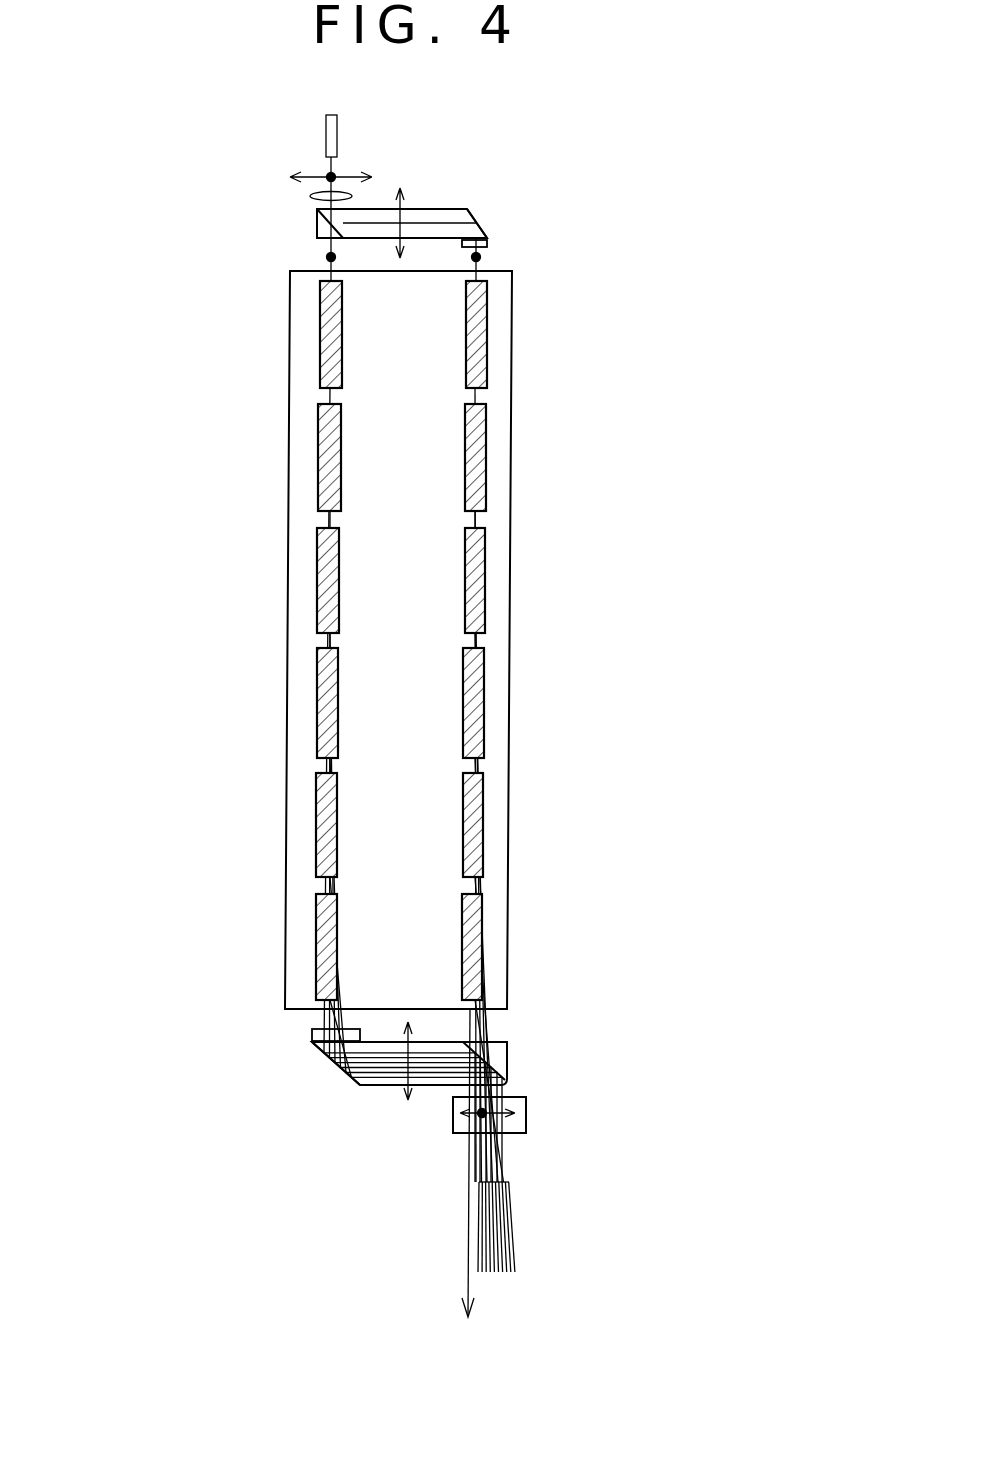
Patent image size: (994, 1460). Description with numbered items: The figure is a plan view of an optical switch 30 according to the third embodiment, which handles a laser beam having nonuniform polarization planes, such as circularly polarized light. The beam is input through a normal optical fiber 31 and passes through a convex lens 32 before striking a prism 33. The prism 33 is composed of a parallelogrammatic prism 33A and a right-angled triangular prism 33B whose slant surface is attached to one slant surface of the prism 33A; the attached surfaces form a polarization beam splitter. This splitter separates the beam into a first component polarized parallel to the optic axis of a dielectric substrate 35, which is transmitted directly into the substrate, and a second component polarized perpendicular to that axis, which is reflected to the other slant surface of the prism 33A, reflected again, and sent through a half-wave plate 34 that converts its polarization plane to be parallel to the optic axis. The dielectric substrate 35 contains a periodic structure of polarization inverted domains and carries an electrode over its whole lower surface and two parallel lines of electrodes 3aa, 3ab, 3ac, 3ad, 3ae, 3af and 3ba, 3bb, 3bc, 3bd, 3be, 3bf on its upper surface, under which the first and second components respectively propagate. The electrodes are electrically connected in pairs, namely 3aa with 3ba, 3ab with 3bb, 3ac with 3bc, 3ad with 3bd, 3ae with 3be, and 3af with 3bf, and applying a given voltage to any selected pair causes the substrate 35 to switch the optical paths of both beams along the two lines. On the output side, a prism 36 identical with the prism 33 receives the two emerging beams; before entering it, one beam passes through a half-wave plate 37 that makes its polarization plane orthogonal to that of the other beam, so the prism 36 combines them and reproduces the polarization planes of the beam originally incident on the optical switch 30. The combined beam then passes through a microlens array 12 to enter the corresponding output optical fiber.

The optical switch 30 is at (110, 1138).
The optical fiber 31 is at (338, 126).
The convex lens 32 is at (352, 190).
The prism 33 is at (453, 210).
The parallelogrammatic prism 33A is at (463, 218).
The right-angled triangular prism 33B is at (317, 222).
The half-wave plate 34 is at (487, 243).
The dielectric substrate 35 is at (503, 508).
The electrode 3aa is at (318, 318).
The electrode 3ab is at (318, 447).
The electrode 3ac is at (317, 556).
The electrode 3ad is at (317, 680).
The electrode 3ae is at (316, 811).
The electrode 3af is at (316, 930).
The electrode 3ba is at (485, 333).
The electrode 3bb is at (483, 448).
The electrode 3bc is at (477, 560).
The electrode 3bd is at (478, 688).
The electrode 3be is at (478, 812).
The electrode 3bf is at (480, 948).
The prism 36 is at (375, 1087).
The half-wave plate 37 is at (317, 1035).
The microlens array 12 is at (517, 1107).